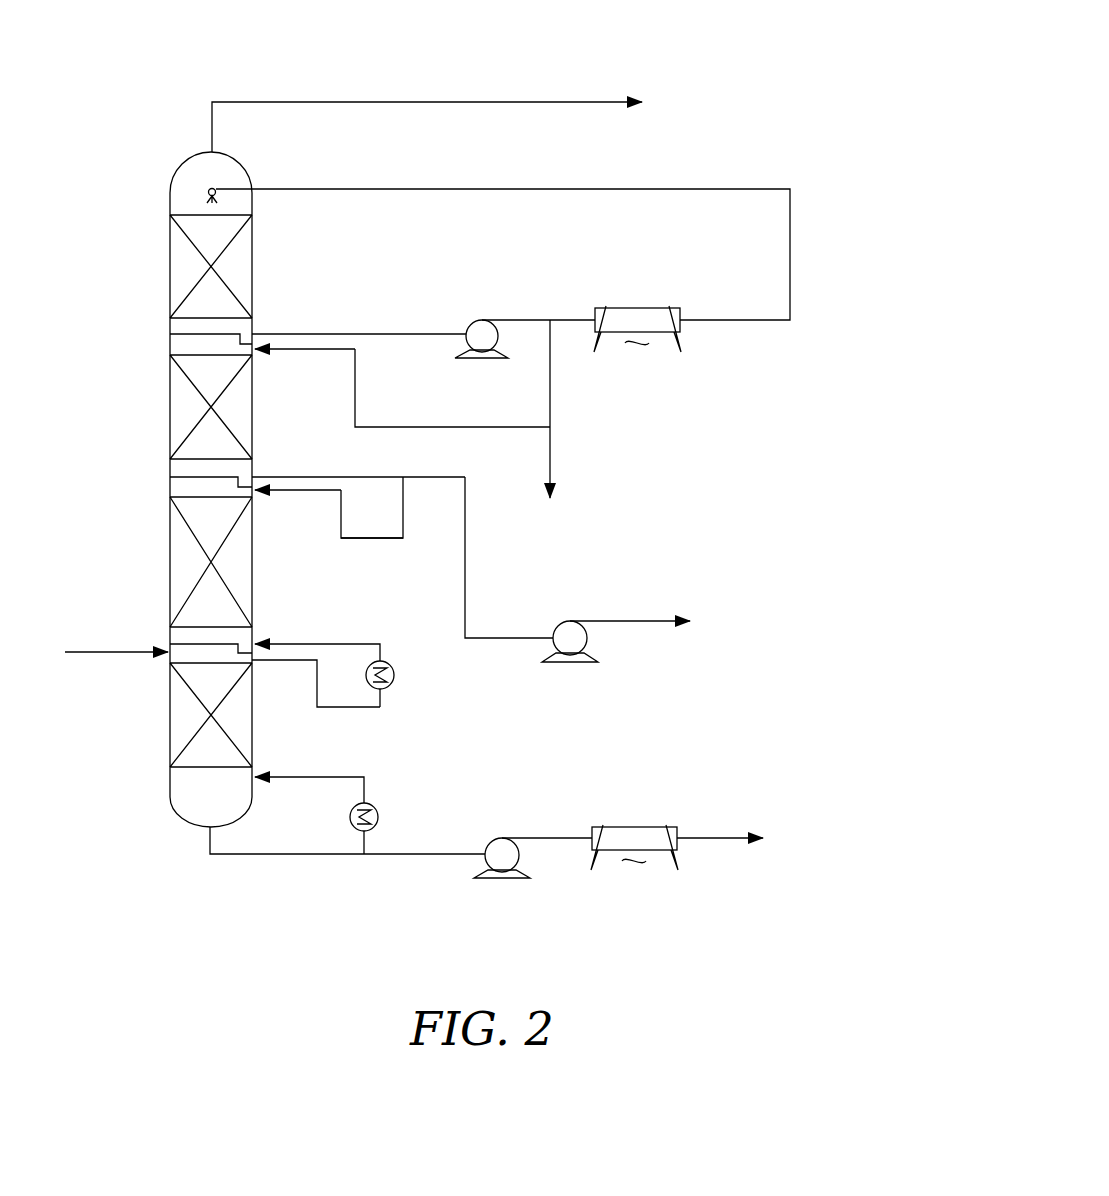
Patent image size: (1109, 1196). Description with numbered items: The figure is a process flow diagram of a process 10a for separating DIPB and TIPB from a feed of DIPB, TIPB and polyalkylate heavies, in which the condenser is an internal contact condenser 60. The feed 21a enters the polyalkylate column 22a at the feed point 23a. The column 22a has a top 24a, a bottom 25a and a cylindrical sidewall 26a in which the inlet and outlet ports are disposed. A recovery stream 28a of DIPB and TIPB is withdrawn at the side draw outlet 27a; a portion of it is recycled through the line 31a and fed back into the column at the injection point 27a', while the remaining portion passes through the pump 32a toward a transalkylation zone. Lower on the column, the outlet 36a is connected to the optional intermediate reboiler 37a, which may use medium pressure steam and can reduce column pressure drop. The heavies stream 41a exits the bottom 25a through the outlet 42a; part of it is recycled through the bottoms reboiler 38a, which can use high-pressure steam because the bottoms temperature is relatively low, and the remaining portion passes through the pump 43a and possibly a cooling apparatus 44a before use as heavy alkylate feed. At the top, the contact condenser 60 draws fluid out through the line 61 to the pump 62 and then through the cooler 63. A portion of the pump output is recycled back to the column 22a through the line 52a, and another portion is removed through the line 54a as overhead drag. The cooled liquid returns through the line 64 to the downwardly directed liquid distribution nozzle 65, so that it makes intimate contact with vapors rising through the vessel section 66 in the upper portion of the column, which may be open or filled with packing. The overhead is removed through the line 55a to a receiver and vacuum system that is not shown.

The process 10a is at (838, 52).
The polyalkylate column 22a is at (162, 191).
The top 24a is at (200, 153).
The bottom 25a is at (171, 800).
The vessel section 66 is at (255, 270).
The cylindrical sidewall 26a is at (170, 345).
The side draw outlet 27a is at (317, 469).
The injection point 27a' is at (329, 507).
The recycle line 31a is at (393, 540).
The feed point 23a is at (168, 650).
The feed 21a is at (72, 648).
The overhead line 55a is at (510, 102).
The liquid distribution device or nozzle 65 is at (213, 188).
The return line 64 is at (458, 189).
The contact condenser 60 is at (816, 243).
The draw line 61 is at (330, 334).
The pump 62 is at (484, 320).
The cooler 63 is at (673, 308).
The recycle line 52a is at (458, 427).
The overhead drag line 54a is at (551, 455).
The recovery stream 28a is at (467, 561).
The pump 32a is at (570, 622).
The outlet 36a is at (254, 663).
The intermediate reboiler 37a is at (382, 662).
The reboiler 38a is at (317, 707).
The outlet 42a is at (213, 826).
The heavies stream 41a is at (275, 855).
The pump 43a is at (503, 838).
The cooling apparatus 44a is at (677, 828).